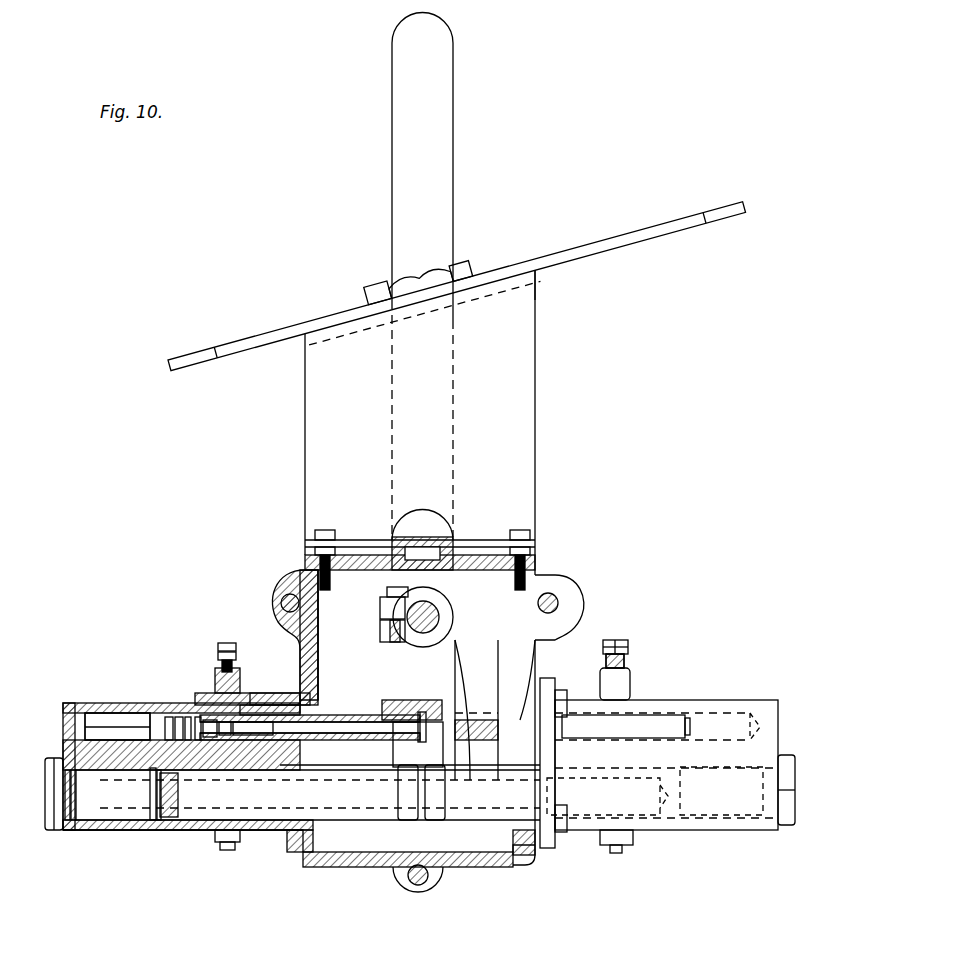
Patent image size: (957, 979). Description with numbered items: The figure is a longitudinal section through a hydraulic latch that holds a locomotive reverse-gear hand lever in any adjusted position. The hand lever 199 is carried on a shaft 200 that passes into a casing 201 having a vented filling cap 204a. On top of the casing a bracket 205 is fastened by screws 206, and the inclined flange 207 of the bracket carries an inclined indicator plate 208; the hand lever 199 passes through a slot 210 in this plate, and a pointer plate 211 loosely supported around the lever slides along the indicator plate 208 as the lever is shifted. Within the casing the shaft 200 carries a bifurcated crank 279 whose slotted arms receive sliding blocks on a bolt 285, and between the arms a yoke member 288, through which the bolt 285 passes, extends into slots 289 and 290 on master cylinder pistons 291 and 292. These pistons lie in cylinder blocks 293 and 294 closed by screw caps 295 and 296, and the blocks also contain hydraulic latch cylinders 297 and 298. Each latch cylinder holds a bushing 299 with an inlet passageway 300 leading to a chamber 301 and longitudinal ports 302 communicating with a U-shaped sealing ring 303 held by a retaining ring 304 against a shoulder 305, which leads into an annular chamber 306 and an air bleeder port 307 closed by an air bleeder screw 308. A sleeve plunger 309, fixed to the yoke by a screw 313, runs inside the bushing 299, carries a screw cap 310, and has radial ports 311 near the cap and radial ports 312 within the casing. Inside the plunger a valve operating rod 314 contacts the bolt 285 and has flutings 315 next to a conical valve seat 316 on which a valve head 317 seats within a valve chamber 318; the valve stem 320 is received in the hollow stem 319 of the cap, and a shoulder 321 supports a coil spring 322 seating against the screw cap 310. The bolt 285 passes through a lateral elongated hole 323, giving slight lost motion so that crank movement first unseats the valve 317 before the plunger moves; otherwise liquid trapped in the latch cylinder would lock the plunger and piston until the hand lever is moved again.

The hand lever 199 is at (392, 123).
The indicator plate 208 is at (614, 240).
The slot 210 is at (368, 300).
The pointer plate 211 is at (372, 287).
The bracket 205 is at (535, 363).
The inclined flange 207 is at (535, 283).
The screws 206 is at (315, 530).
The vented filling cap 204a is at (430, 515).
The shaft 200 is at (440, 615).
The screw 313 is at (405, 700).
The hydraulic latch cylinder 297 is at (97, 703).
The inlet passageway 300 is at (310, 748).
The U-shaped sealing ring 303 is at (240, 693).
The retaining ring 304 is at (238, 643).
The radial ports 312 is at (355, 765).
The yoke member 288 is at (420, 706).
The lateral elongated hole 323 is at (458, 708).
The bolt 285 is at (474, 710).
The bifurcated crank 279 is at (440, 685).
The casing 201 is at (320, 870).
The slot 289 is at (380, 862).
The screw cap 295 is at (52, 830).
The cylinder block 293 is at (130, 832).
The shoulder 305 is at (192, 818).
The master cylinder piston 291 is at (252, 850).
The valve chamber 318 is at (95, 740).
The hollow stem 319 is at (112, 770).
The shoulder 321 is at (165, 740).
The annular chamber 306 is at (168, 775).
The valve stem 320 is at (172, 703).
The coil spring 322 is at (180, 703).
The valve head 317 is at (188, 703).
The conical valve seat 316 is at (195, 703).
The flutings 315 is at (203, 703).
The air bleeder port 307 is at (210, 703).
The radial ports 311 is at (130, 703).
The screw cap 310 is at (115, 703).
The chamber 301 is at (288, 693).
The longitudinal ports 302 is at (295, 705).
The air bleeder screw 308 is at (615, 640).
The bushing 299 is at (318, 700).
The valve operating rod 314 is at (400, 700).
The sleeve plunger 309 is at (380, 700).
The cylinder block 294 is at (722, 832).
The screw cap 296 is at (795, 825).
The hydraulic latch cylinder 298 is at (740, 712).
The master cylinder piston 292 is at (690, 782).
The slot 290 is at (596, 830).